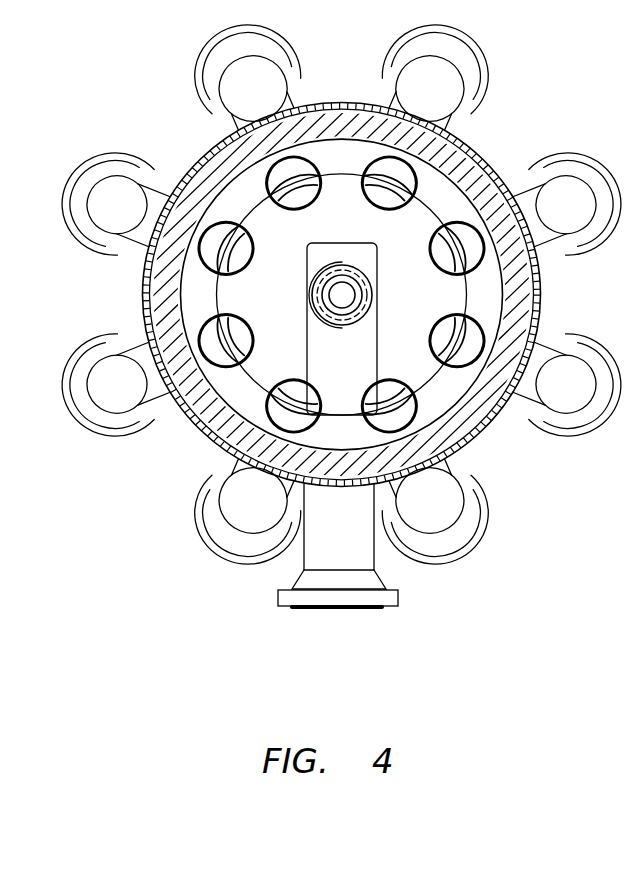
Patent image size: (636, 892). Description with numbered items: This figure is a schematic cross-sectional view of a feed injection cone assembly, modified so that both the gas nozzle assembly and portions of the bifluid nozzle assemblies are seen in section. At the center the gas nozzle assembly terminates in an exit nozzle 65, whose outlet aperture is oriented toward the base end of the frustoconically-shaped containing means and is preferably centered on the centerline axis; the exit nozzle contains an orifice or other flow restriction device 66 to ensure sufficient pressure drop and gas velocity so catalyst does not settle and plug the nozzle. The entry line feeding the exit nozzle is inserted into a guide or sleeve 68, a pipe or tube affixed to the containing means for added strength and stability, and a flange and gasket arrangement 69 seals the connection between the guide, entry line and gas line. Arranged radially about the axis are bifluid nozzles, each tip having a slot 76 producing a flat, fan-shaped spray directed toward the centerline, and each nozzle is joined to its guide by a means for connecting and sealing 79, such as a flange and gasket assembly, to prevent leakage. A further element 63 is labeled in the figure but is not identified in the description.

The rotor disc 63 is at (318, 272).
The central bore 65 is at (368, 290).
The hub bushing 66 is at (311, 297).
The support stem 68 is at (365, 558).
The base flange 69 is at (297, 571).
The ball 76 is at (402, 191).
The peripheral cup 79 is at (140, 425).